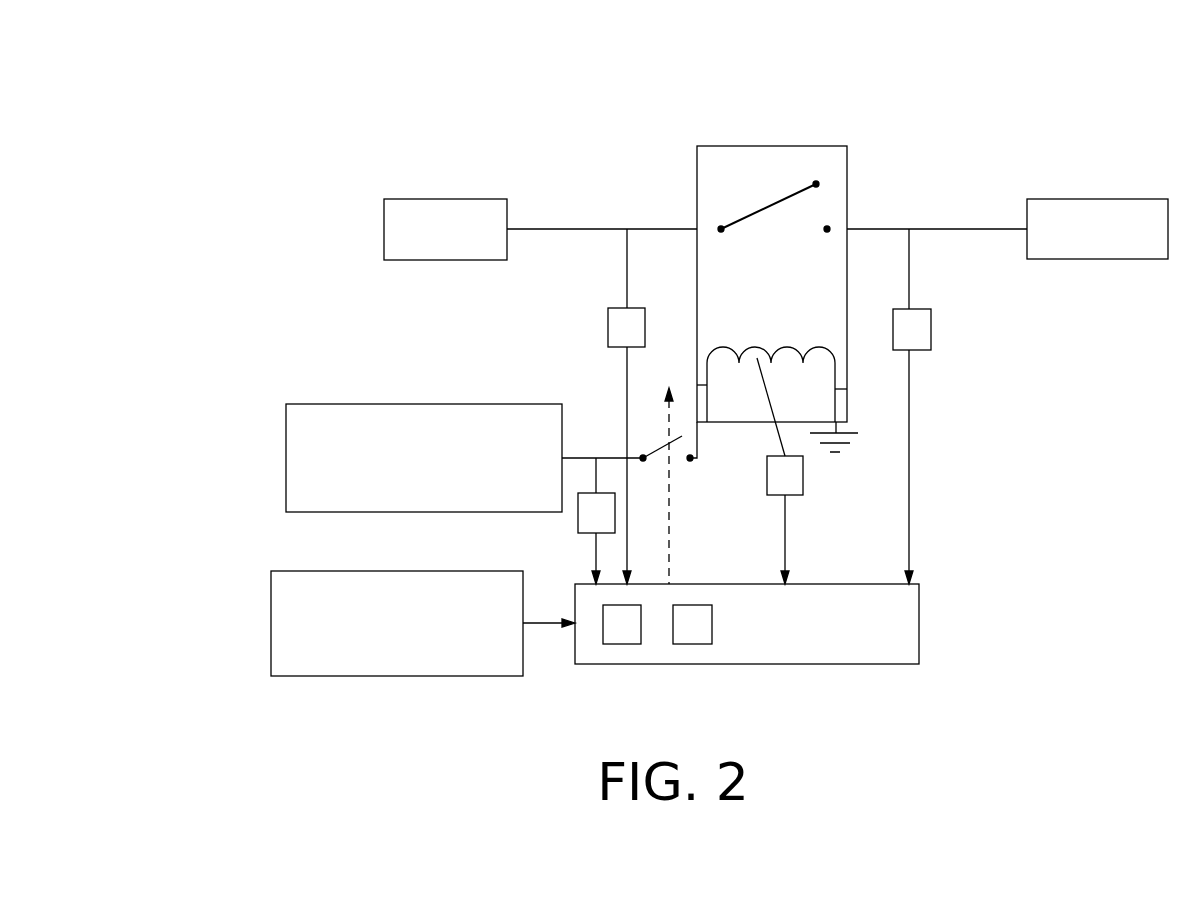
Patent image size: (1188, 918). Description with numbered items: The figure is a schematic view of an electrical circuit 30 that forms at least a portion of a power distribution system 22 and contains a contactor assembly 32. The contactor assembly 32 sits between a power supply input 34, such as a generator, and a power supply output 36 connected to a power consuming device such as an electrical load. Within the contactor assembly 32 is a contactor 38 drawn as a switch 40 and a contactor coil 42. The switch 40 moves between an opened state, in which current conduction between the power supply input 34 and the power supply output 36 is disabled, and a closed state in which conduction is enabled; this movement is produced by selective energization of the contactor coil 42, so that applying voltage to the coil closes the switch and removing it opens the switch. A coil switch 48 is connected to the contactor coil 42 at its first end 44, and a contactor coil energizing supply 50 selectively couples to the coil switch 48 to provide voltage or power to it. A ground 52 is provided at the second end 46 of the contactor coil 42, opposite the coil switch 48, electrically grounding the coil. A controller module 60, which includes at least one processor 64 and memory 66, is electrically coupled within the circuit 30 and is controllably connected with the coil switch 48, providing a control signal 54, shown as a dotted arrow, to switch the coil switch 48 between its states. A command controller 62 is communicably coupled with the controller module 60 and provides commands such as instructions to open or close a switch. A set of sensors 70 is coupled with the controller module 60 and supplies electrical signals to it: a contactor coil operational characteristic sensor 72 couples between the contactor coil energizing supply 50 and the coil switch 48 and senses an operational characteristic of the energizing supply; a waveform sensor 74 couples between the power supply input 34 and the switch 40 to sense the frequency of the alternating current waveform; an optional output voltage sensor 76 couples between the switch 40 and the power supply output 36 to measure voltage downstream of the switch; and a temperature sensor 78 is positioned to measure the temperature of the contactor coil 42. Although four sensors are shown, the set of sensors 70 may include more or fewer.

The power distribution system 22 is at (172, 90).
The electrical circuit 30 is at (622, 110).
The contactor assembly 32 is at (665, 192).
The power supply input 34 is at (416, 199).
The power supply output 36 is at (1070, 199).
The contactor 38 is at (745, 146).
The switch 40 is at (787, 197).
The contactor coil 42 is at (785, 347).
The first end 44 is at (707, 385).
The second end 46 is at (847, 389).
The coil switch 48 is at (657, 450).
The contactor coil energizing supply 50 is at (380, 404).
The ground 52 is at (845, 447).
The control signal 54 is at (672, 496).
The controller module 60 is at (815, 664).
The command controller 62 is at (382, 676).
The processor 64 is at (620, 644).
The memory 66 is at (689, 644).
The set of sensors 70 is at (598, 327).
The contactor coil operational characteristic sensor 72 is at (577, 518).
The waveform sensor 74 is at (616, 308).
The output voltage sensor 76 is at (921, 350).
The temperature sensor 78 is at (803, 483).